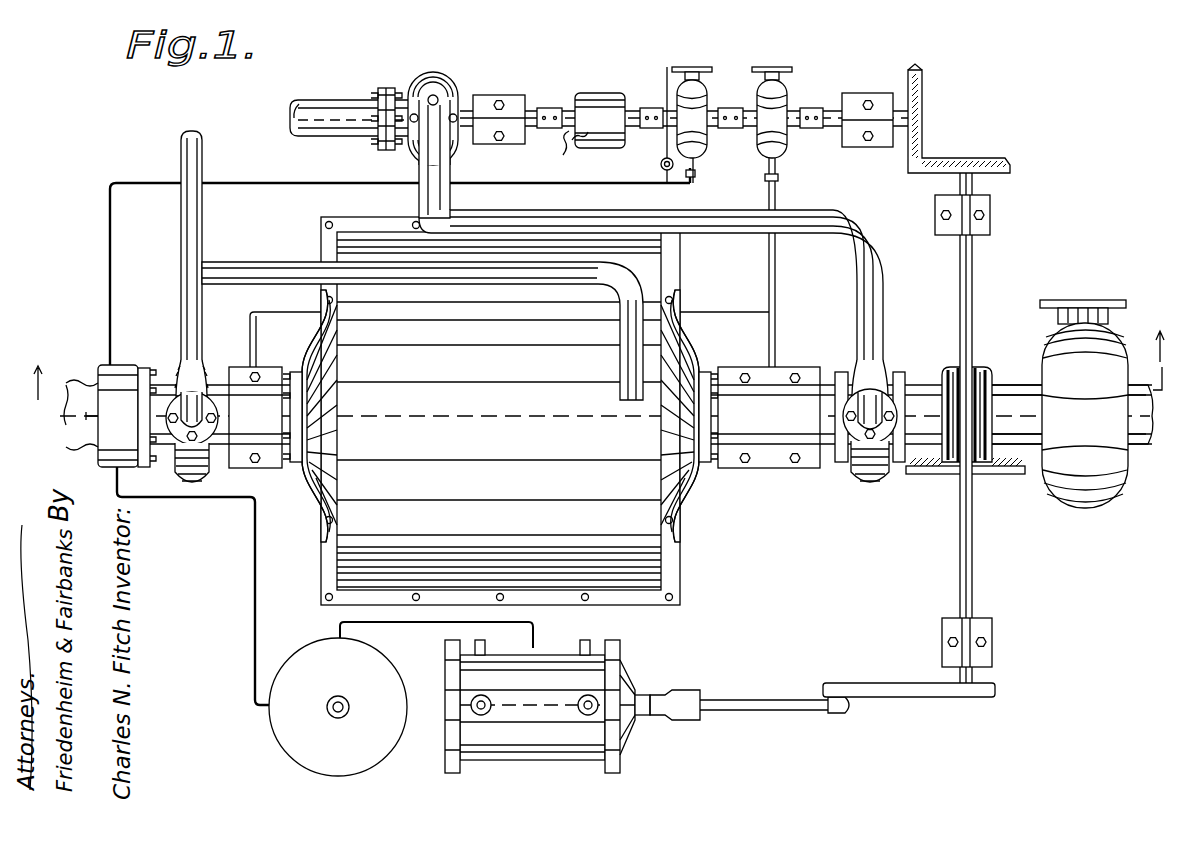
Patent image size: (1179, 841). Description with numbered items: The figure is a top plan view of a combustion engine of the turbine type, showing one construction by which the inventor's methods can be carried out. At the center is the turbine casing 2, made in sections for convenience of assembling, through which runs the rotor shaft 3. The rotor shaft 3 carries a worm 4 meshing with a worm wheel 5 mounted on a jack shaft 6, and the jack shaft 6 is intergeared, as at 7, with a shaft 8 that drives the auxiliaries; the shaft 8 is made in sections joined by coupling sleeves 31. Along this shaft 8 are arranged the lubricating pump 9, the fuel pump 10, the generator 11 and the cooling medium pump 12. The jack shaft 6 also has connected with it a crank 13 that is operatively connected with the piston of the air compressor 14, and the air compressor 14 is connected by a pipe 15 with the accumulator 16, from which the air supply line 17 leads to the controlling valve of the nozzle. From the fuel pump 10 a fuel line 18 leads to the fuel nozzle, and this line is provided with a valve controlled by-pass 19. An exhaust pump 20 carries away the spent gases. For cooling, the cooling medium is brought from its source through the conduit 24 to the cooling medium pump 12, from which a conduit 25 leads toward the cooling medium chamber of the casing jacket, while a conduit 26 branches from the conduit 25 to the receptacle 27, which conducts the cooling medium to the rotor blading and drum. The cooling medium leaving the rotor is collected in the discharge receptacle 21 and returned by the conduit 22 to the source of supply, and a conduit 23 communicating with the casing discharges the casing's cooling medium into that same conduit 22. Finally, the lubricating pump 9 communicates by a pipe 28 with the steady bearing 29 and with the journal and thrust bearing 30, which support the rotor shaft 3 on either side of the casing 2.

The turbine casing 2 is at (500, 411).
The rotor shaft 3 is at (1005, 390).
The worm 4 is at (948, 382).
The worm wheel 5 is at (934, 476).
The jack shaft 6 is at (972, 537).
The intergearing 7 is at (959, 118).
The shaft 8 is at (842, 112).
The lubricating pump 9 is at (786, 96).
The fuel pump 10 is at (708, 100).
The generator 11 is at (600, 96).
The cooling medium pump 12 is at (455, 90).
The crank 13 is at (873, 683).
The air compressor 14 is at (538, 740).
The pipe 15 is at (403, 626).
The accumulator 16 is at (338, 707).
The air supply line 17 is at (254, 606).
The fuel line 18 is at (556, 186).
The valve controlled by-pass 19 is at (655, 160).
The exhaust pump 20 is at (1084, 404).
The discharge receptacle 21 is at (191, 484).
The conduit 22 is at (184, 234).
The conduit 23 is at (270, 282).
The conduit 24 is at (320, 118).
The conduit 25 is at (452, 170).
The conduit 26 is at (832, 218).
The receptacle 27 is at (867, 488).
The pipe 28 is at (253, 313).
The steady bearing 29 is at (275, 378).
The journal and thrust bearing 30 is at (773, 470).
The coupling sleeves 31 is at (549, 107).